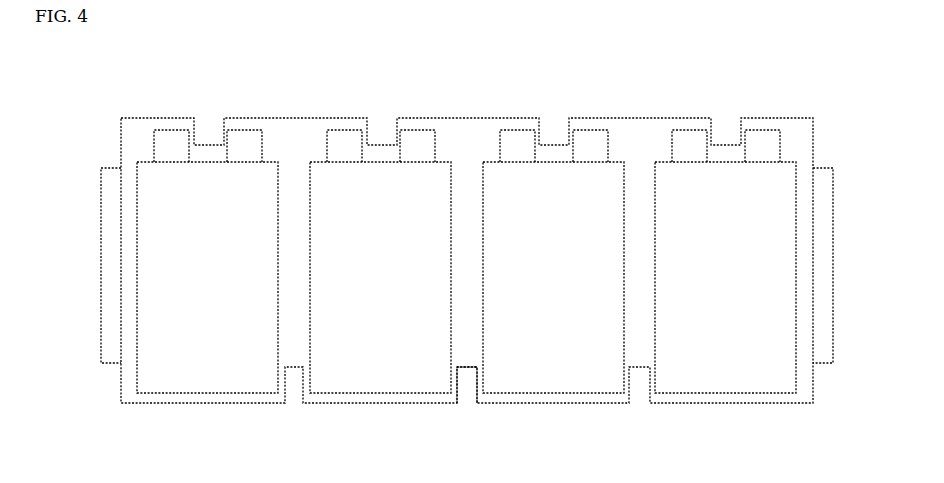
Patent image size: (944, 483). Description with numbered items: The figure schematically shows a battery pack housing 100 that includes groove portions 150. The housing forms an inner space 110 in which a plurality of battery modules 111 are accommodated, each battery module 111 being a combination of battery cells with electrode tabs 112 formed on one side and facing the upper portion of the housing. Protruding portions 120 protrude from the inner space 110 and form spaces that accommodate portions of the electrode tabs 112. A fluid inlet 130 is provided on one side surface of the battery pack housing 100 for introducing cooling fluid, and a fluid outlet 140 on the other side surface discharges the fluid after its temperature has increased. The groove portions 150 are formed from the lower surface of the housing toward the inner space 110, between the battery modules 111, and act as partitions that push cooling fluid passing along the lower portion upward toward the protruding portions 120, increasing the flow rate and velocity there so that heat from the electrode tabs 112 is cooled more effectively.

The battery pack housing 100 is at (455, 256).
The inner space 110 is at (234, 229).
The battery module 111 is at (160, 258).
The electrode tab 112 is at (344, 145).
The protruding portion 120 is at (441, 132).
The fluid inlet 130 is at (110, 210).
The fluid outlet 140 is at (832, 170).
The groove portion 150 is at (470, 390).